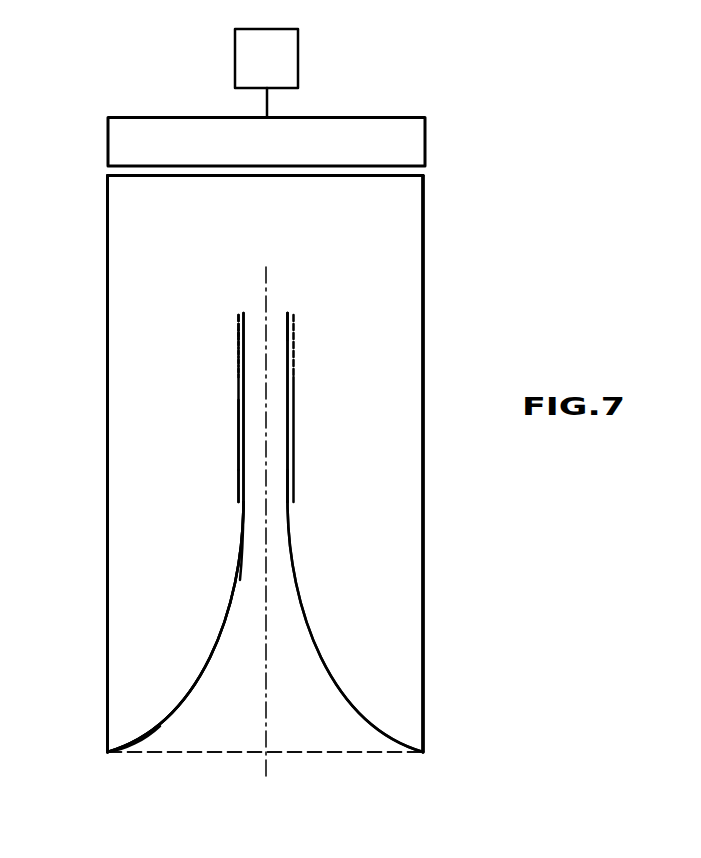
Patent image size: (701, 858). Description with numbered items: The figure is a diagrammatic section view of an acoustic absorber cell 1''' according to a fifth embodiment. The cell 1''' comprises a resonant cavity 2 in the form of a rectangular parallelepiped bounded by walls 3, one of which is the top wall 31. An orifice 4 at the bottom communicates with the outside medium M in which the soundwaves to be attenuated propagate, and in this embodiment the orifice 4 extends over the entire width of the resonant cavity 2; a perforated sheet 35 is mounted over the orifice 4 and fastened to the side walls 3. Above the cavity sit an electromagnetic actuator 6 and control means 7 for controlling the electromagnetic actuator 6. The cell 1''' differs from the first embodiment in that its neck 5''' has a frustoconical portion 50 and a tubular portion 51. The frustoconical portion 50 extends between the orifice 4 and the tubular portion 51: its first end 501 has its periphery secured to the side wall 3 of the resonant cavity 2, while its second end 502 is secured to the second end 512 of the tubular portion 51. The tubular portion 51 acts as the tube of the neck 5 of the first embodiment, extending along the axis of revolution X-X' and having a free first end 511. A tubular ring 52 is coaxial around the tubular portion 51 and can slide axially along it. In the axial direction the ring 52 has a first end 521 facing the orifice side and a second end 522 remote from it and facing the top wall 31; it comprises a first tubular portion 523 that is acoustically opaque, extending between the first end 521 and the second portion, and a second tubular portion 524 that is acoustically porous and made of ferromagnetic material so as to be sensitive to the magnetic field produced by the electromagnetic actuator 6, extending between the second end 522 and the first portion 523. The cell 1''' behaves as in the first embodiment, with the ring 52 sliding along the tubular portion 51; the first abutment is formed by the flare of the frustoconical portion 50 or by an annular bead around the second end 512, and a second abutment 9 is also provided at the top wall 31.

The acoustic absorber cell 1''' is at (243, 389).
The control means 7 is at (259, 70).
The electromagnetic actuator 6 is at (257, 155).
The walls 3 is at (130, 178).
The resonant cavity 2 is at (390, 270).
The second abutment 9 is at (353, 178).
The top wall 31 is at (391, 178).
The outside medium M is at (58, 350).
The neck 5 is at (266, 528).
The ring 52 is at (243, 395).
The second end of the ring 522 is at (238, 312).
The second tubular portion of the ring 524 is at (238, 342).
The first tubular portion of the ring 523 is at (238, 430).
The first end of the ring 521 is at (237, 500).
The tubular portion 51 is at (287, 424).
The first end of the tube 511 is at (287, 312).
The second end of the tube 512 is at (282, 500).
The neck 5''' is at (266, 627).
The frustoconical portion 50 is at (215, 647).
The second end of the frustoconical portion 502 is at (240, 520).
The first end of the frustoconical portion 501 is at (117, 740).
The perforated sheet 35 is at (365, 755).
The orifice 4 is at (298, 720).